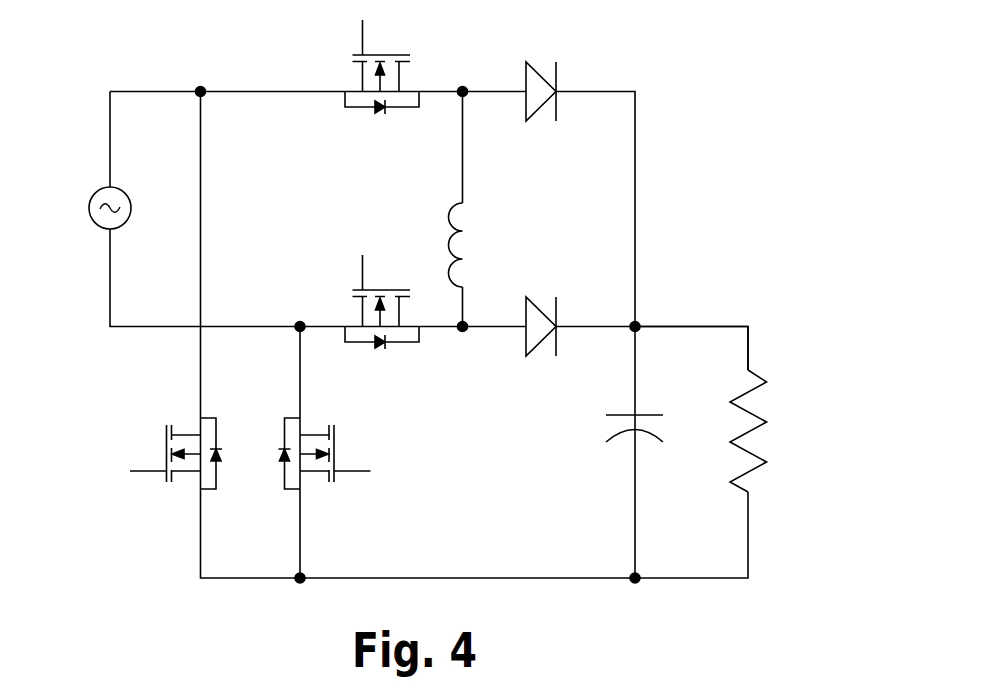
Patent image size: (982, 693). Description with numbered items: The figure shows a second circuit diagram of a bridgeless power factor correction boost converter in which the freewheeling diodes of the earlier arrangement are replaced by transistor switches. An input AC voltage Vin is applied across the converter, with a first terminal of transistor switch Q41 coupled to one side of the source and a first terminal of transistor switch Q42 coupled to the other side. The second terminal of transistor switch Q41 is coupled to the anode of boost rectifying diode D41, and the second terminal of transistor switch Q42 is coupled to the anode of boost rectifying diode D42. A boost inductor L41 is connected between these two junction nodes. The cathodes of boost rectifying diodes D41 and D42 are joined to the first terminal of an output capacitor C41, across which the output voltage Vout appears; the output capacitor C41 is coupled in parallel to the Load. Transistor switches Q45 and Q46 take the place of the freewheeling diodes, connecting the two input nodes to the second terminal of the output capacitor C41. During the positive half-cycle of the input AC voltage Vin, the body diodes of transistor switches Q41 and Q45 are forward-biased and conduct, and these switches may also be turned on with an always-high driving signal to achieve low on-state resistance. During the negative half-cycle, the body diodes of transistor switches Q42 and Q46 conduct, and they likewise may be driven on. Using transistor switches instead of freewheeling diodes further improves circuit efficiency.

The input AC voltage Vin is at (84, 208).
The transistor switch Q41 is at (361, 67).
The transistor switch Q42 is at (361, 302).
The boost inductor L41 is at (483, 245).
The boost rectifying diode D41 is at (543, 75).
The boost rectifying diode D42 is at (543, 346).
The output capacitor C41 is at (608, 428).
The transistor switch Q45 is at (166, 463).
The transistor switch Q46 is at (336, 463).
The output voltage Vout is at (732, 359).
The load Load is at (780, 435).